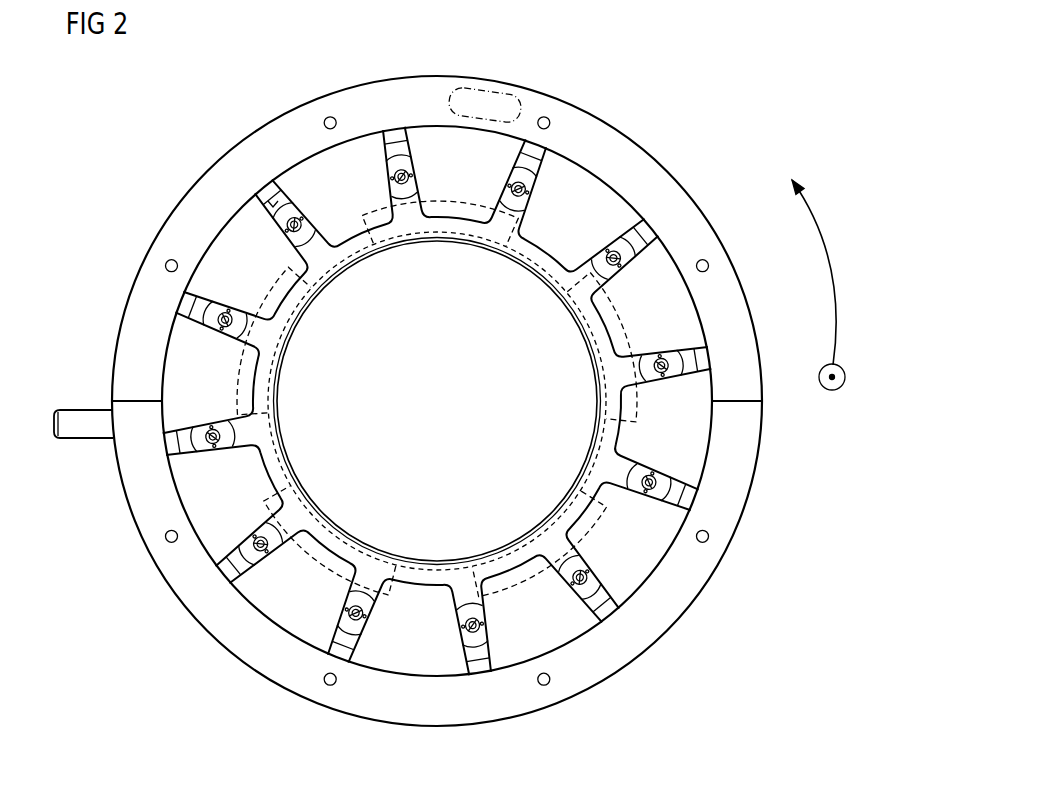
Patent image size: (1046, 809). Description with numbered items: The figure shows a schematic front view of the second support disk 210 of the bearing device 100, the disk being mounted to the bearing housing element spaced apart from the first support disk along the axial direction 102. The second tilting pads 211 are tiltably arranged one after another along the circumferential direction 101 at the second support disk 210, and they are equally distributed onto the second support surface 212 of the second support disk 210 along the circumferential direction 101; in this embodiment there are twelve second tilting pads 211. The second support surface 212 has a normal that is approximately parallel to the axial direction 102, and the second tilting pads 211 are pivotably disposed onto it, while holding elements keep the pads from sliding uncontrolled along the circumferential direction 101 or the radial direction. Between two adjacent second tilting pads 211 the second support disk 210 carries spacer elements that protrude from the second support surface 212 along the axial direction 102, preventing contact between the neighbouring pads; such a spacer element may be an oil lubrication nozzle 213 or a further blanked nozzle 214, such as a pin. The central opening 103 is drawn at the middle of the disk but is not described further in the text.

The bearing device 100 is at (772, 85).
The circumferential direction 101 is at (828, 270).
The axial direction 102 is at (835, 390).
The central opening 103 is at (388, 450).
The second support disk 210 is at (706, 250).
The second tilting pads 211 is at (320, 173).
The second support surface 212 is at (267, 197).
The oil lubrication nozzle 213 is at (392, 157).
The further blanked nozzle 214 is at (287, 617).